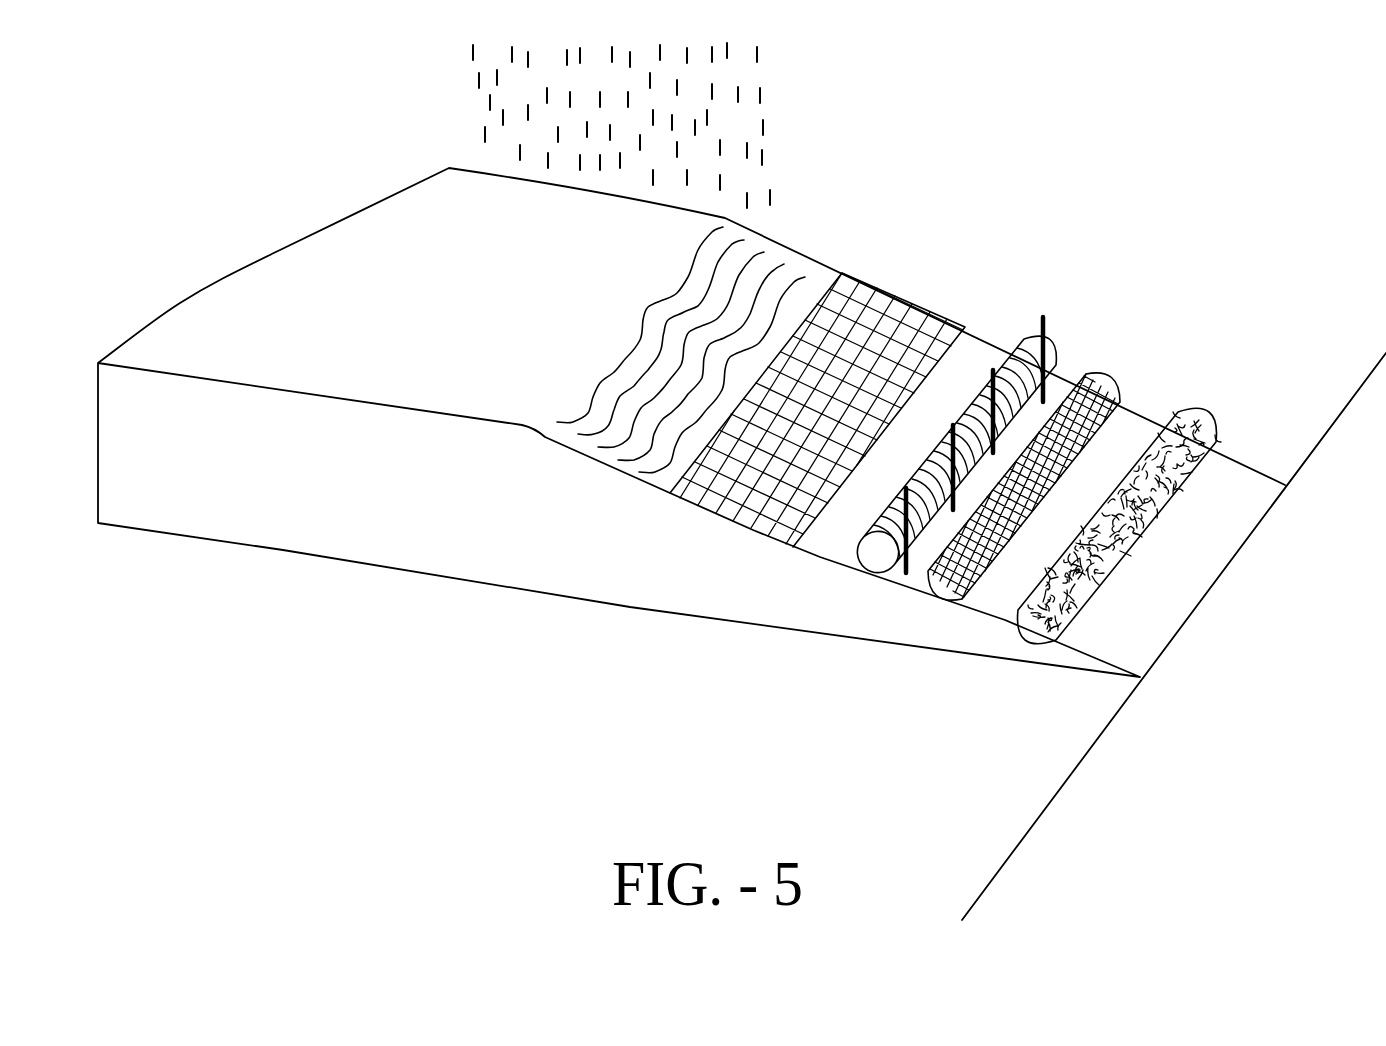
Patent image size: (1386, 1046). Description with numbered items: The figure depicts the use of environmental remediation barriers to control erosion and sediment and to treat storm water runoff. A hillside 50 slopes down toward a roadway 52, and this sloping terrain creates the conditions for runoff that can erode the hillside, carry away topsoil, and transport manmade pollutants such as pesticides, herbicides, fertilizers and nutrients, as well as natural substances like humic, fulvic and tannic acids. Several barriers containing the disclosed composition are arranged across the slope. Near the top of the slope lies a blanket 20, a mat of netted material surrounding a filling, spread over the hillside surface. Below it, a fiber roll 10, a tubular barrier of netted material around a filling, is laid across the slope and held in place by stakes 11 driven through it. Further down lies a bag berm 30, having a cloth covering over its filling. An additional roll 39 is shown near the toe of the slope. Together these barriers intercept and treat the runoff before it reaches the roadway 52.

The fiber roll 10 is at (1063, 337).
The stakes 11 is at (953, 512).
The blanket 20 is at (888, 267).
The bag berm 30 is at (1123, 365).
The straw-filled fiber roll 39 is at (1028, 642).
The hillside 50 is at (610, 537).
The roadway 52 is at (1181, 740).